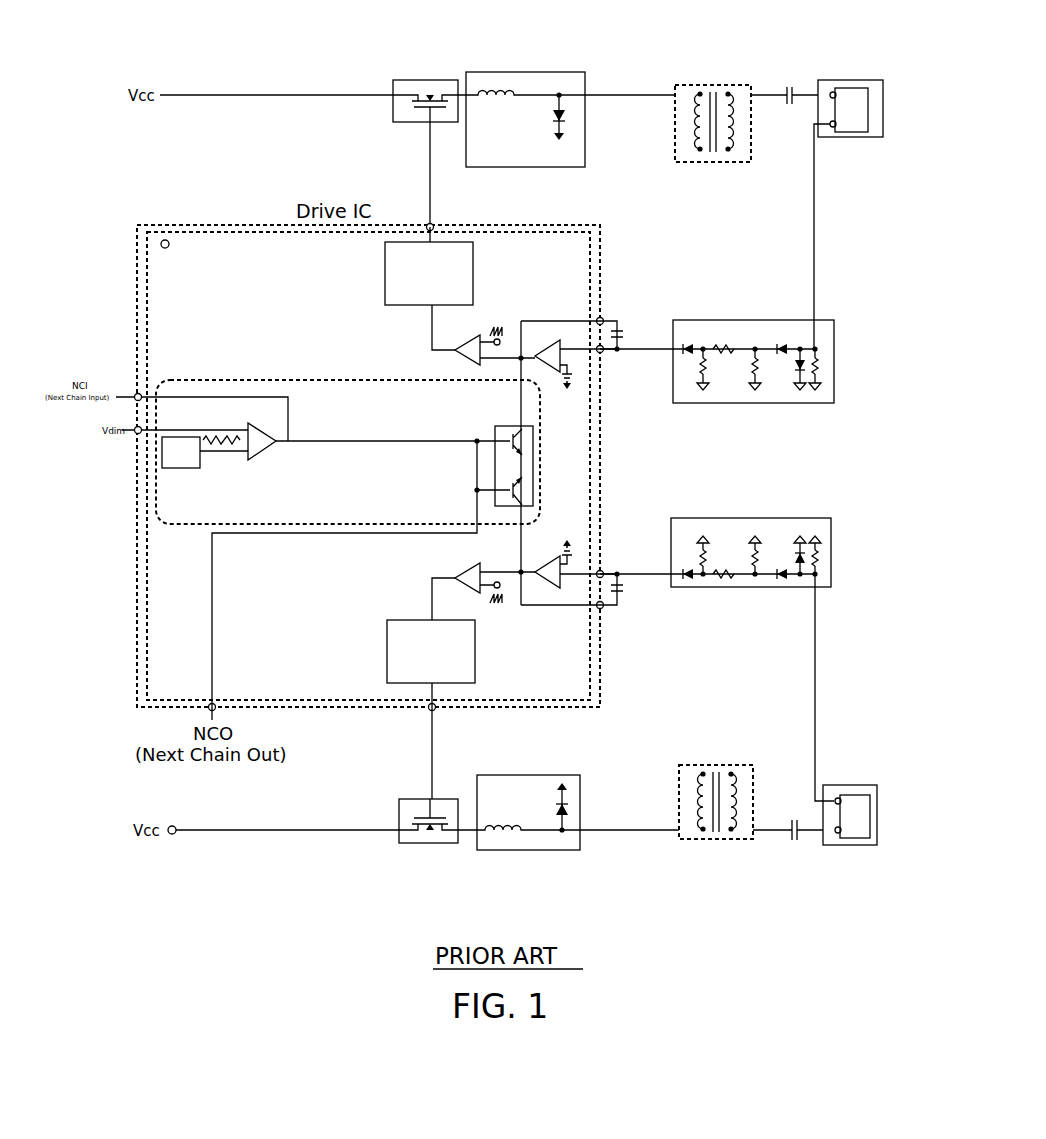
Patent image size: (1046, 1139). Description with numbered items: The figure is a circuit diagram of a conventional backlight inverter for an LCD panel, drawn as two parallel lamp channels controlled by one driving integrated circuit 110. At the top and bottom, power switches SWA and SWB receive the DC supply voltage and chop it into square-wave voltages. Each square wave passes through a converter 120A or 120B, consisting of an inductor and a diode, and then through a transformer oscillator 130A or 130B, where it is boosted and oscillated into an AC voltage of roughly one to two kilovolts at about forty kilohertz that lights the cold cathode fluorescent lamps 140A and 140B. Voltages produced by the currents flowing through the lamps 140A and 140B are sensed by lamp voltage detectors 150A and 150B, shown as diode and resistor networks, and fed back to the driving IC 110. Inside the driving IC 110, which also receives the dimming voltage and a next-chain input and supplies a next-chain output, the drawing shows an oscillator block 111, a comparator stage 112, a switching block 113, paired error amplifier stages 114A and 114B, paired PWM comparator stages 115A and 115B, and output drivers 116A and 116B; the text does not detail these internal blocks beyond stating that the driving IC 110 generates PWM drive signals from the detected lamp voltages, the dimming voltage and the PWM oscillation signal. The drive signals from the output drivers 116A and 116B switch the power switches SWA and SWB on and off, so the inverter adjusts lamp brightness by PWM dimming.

The driving integrated circuit 110 is at (606, 478).
The oscillator 111 is at (186, 470).
The comparator 112 is at (270, 458).
The transistor switching circuit 113 is at (495, 428).
The first error amplifier 114A is at (546, 386).
The second error amplifier 114B is at (548, 558).
The first PWM comparator 115A is at (455, 352).
The second PWM comparator 115B is at (455, 570).
The first output driver 116A is at (385, 277).
The second output driver 116B is at (387, 653).
The converter 120A is at (510, 72).
The converter 120B is at (522, 850).
The transformer oscillator 130A is at (708, 85).
The transformer oscillator 130B is at (718, 839).
The CCFL 140A is at (846, 80).
The CCFL 140B is at (848, 845).
The lamp voltage detector 150A is at (734, 320).
The lamp voltage detector 150B is at (778, 518).
The power switch SWA is at (430, 80).
The power switch SWB is at (422, 843).